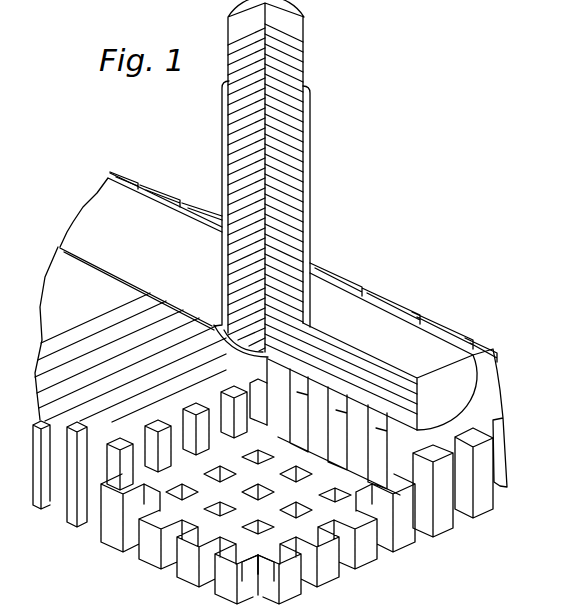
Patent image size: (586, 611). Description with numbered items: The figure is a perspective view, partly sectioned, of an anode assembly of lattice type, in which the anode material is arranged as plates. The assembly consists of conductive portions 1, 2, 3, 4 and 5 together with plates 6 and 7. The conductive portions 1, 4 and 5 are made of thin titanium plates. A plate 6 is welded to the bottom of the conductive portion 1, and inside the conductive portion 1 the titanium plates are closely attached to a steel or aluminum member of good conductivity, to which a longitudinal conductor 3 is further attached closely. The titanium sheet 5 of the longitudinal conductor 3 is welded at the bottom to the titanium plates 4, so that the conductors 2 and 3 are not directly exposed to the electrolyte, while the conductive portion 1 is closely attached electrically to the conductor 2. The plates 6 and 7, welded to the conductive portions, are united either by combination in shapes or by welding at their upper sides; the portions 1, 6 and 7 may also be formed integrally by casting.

The conductive portion 1 is at (462, 396).
The conductor 2 is at (340, 355).
The longitudinal conductor 3 is at (296, 36).
The titanium plates 4 is at (166, 262).
The titanium sheet 5 is at (306, 155).
The plate 6 is at (76, 511).
The plate 7 is at (322, 575).